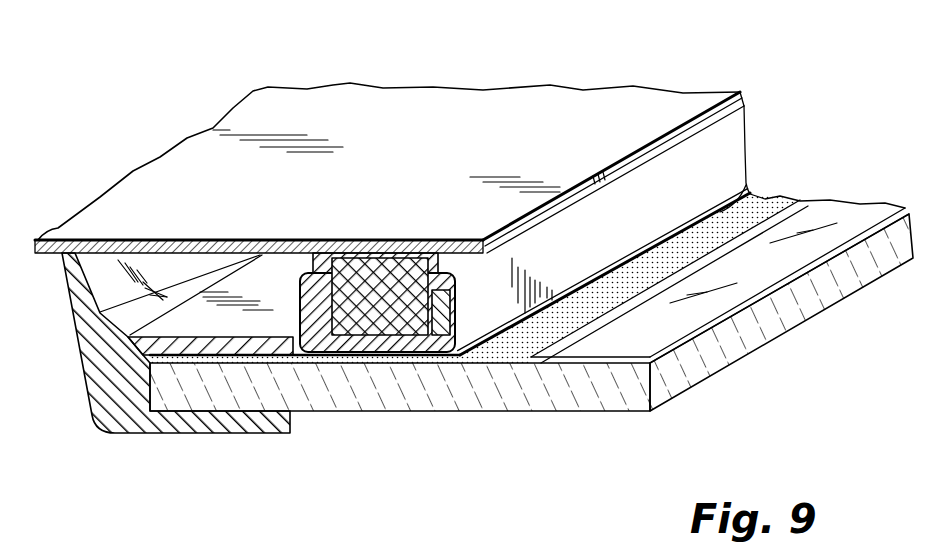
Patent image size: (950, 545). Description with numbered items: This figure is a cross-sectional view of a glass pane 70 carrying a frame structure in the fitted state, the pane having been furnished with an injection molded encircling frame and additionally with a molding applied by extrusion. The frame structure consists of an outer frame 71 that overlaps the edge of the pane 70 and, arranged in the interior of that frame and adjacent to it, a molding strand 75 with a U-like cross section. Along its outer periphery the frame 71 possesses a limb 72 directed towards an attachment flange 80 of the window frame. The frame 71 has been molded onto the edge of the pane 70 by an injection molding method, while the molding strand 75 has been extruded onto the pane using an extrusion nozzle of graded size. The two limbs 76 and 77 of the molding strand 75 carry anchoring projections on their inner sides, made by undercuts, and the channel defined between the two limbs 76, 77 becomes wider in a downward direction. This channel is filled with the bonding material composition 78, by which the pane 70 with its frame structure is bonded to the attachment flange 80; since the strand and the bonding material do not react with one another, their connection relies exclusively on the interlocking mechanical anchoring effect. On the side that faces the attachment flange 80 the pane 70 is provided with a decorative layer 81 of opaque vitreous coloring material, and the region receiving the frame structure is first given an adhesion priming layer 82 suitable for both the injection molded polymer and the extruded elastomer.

The glass pane 70 is at (513, 393).
The outer frame 71 is at (153, 385).
The limb 72 is at (82, 297).
The molding strand 75 is at (292, 310).
The limb of the molding strand 76 is at (294, 276).
The limb of the molding strand 77 is at (463, 280).
The bonding material composition 78 is at (373, 288).
The attachment flange 80 is at (385, 105).
The decorative layer 81 is at (772, 208).
The adhesion priming layer 82 is at (719, 212).